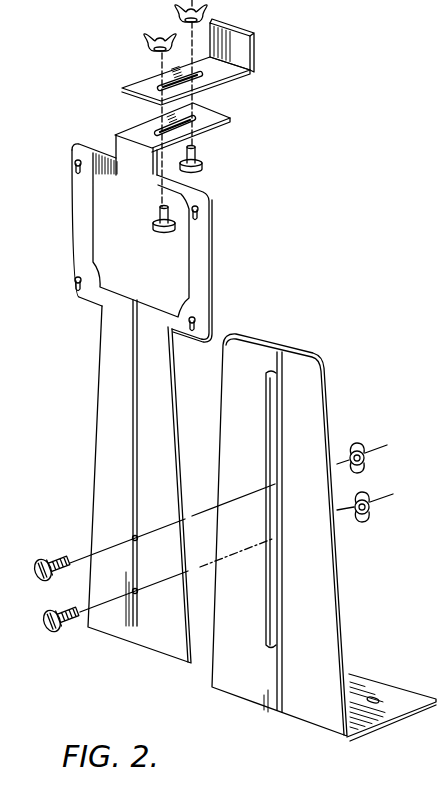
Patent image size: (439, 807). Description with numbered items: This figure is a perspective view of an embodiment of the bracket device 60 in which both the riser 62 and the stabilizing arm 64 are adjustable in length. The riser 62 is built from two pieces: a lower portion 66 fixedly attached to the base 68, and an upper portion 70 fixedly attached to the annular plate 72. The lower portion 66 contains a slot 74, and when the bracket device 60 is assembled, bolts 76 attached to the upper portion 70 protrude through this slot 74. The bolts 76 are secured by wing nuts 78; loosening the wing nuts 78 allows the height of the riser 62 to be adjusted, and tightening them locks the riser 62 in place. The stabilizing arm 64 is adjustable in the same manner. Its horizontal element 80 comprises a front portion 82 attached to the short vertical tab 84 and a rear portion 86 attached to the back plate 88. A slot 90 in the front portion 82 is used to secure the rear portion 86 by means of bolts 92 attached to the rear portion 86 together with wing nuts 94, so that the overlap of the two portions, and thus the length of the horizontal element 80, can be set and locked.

The bracket device 60 is at (148, 403).
The riser 62 is at (309, 552).
The stabilizing arm 64 is at (171, 126).
The lower portion 66 is at (383, 690).
The base 68 is at (367, 732).
The upper portion 70 is at (100, 399).
The annular plate 72 is at (199, 263).
The slot 74 is at (272, 588).
The bolts 76 is at (58, 607).
The wing nuts 78 is at (373, 494).
The horizontal element 80 is at (171, 126).
The front portion 82 is at (137, 160).
The short vertical tab 84 is at (137, 160).
The rear portion 86 is at (210, 57).
The back plate 88 is at (248, 32).
The slot 90 is at (243, 77).
The bolts 92 is at (158, 230).
The wing nuts 94 is at (162, 30).